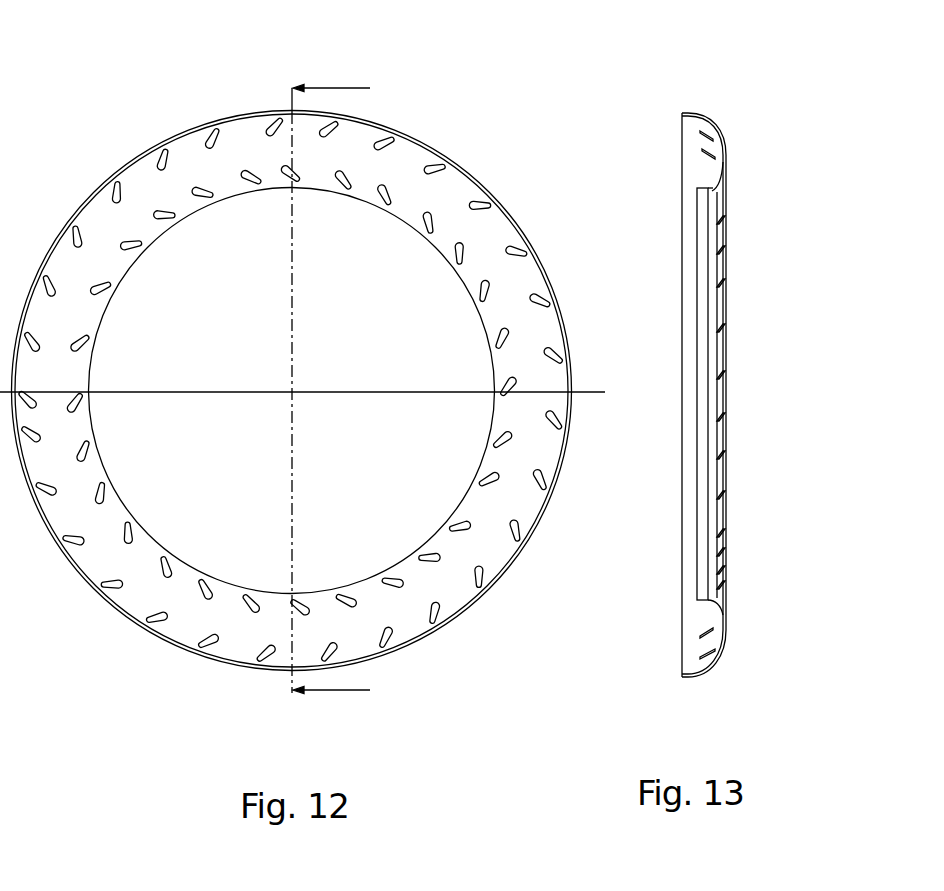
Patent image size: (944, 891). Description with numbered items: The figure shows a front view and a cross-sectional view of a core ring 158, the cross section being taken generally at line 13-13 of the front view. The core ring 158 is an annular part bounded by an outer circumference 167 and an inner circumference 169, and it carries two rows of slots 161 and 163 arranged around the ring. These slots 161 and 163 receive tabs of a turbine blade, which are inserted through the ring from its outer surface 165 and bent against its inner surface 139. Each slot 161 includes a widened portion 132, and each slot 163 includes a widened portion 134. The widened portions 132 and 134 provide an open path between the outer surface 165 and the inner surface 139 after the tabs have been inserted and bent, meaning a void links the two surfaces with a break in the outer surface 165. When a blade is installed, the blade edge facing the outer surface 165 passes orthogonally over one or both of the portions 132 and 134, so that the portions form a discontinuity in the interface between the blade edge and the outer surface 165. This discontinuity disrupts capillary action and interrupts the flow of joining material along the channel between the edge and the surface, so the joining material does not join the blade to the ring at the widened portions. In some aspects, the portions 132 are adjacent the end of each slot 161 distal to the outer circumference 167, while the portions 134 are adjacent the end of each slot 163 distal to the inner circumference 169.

In FIG. 12, the core ring 158 is at (458, 57).
In FIG. 13, the core ring 158 is at (665, 95).
In FIG. 12, the outer surface 165 is at (243, 137).
In FIG. 13, the outer surface 165 is at (722, 532).
In FIG. 12, the outer circumference 167 is at (269, 109).
In FIG. 12, the slot 163 is at (281, 366).
In FIG. 13, the slot 163 is at (720, 145).
In FIG. 12, the slot 161 is at (306, 390).
In FIG. 13, the slot 161 is at (720, 220).
In FIG. 12, the widened portion 132 is at (468, 133).
In FIG. 12, the widened portion 134 is at (476, 182).
In FIG. 12, the inner circumference 169 is at (366, 584).
In FIG. 13, the inner surface 139 is at (693, 620).
In FIG. 12, the line 13- 13 is at (345, 388).